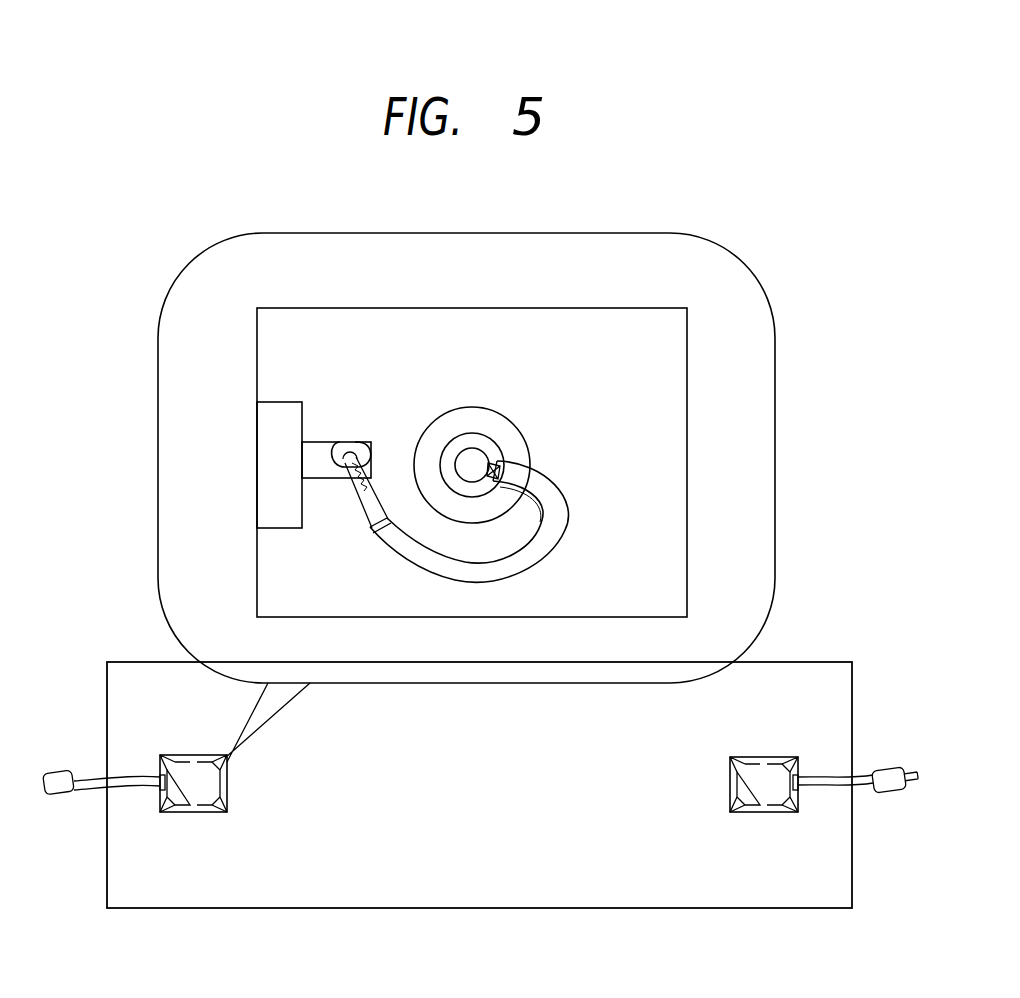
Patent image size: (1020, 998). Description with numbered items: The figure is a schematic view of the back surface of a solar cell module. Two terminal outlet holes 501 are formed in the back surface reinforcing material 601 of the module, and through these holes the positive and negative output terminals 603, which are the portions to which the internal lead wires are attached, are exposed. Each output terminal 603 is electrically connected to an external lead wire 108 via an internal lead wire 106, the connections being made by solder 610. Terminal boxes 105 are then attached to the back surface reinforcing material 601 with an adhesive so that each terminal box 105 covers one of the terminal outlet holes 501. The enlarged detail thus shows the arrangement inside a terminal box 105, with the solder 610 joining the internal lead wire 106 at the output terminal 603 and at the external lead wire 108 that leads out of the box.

The back surface reinforcing material 601 is at (649, 883).
The terminal box 105 is at (210, 797).
The external lead wire 108 is at (92, 788).
The solder 610 is at (335, 460).
The terminal outlet hole 501 is at (530, 462).
The output terminal 603 is at (455, 450).
The internal lead wire 106 is at (560, 538).